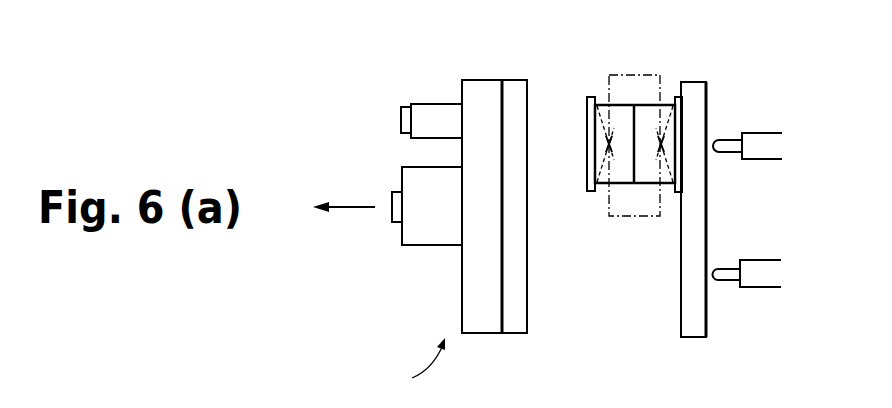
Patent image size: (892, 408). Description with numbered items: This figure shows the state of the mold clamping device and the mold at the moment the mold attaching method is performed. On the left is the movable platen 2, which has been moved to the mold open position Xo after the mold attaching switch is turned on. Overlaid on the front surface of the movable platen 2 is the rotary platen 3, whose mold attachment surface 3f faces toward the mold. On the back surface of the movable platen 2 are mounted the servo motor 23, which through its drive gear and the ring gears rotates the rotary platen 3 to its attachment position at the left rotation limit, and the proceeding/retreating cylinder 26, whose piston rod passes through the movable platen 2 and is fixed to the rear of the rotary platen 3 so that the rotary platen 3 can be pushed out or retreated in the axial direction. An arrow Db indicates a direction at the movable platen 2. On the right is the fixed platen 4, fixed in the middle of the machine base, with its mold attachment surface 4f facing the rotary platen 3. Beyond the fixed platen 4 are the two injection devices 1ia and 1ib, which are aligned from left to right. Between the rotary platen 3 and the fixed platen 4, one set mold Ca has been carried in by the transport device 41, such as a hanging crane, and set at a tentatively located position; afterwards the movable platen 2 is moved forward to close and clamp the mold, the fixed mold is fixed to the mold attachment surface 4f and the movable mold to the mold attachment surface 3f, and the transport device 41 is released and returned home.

The movable platen 2 is at (467, 80).
The rotary platen 3 is at (511, 80).
The mold attachment surface of rotary platen 3f is at (528, 280).
The servo motor 23 is at (419, 103).
The proceeding/retreating cylinder 26 is at (433, 247).
The direction Db is at (350, 204).
The mold open position Xo is at (411, 370).
The mold on the primary side Ca is at (627, 98).
The transport device 41 is at (650, 63).
The fixed platen 4 is at (698, 82).
The mold attachment surface of fixed platen 4f is at (682, 298).
The injection device 1ia is at (769, 133).
The injection device 1ib is at (765, 288).